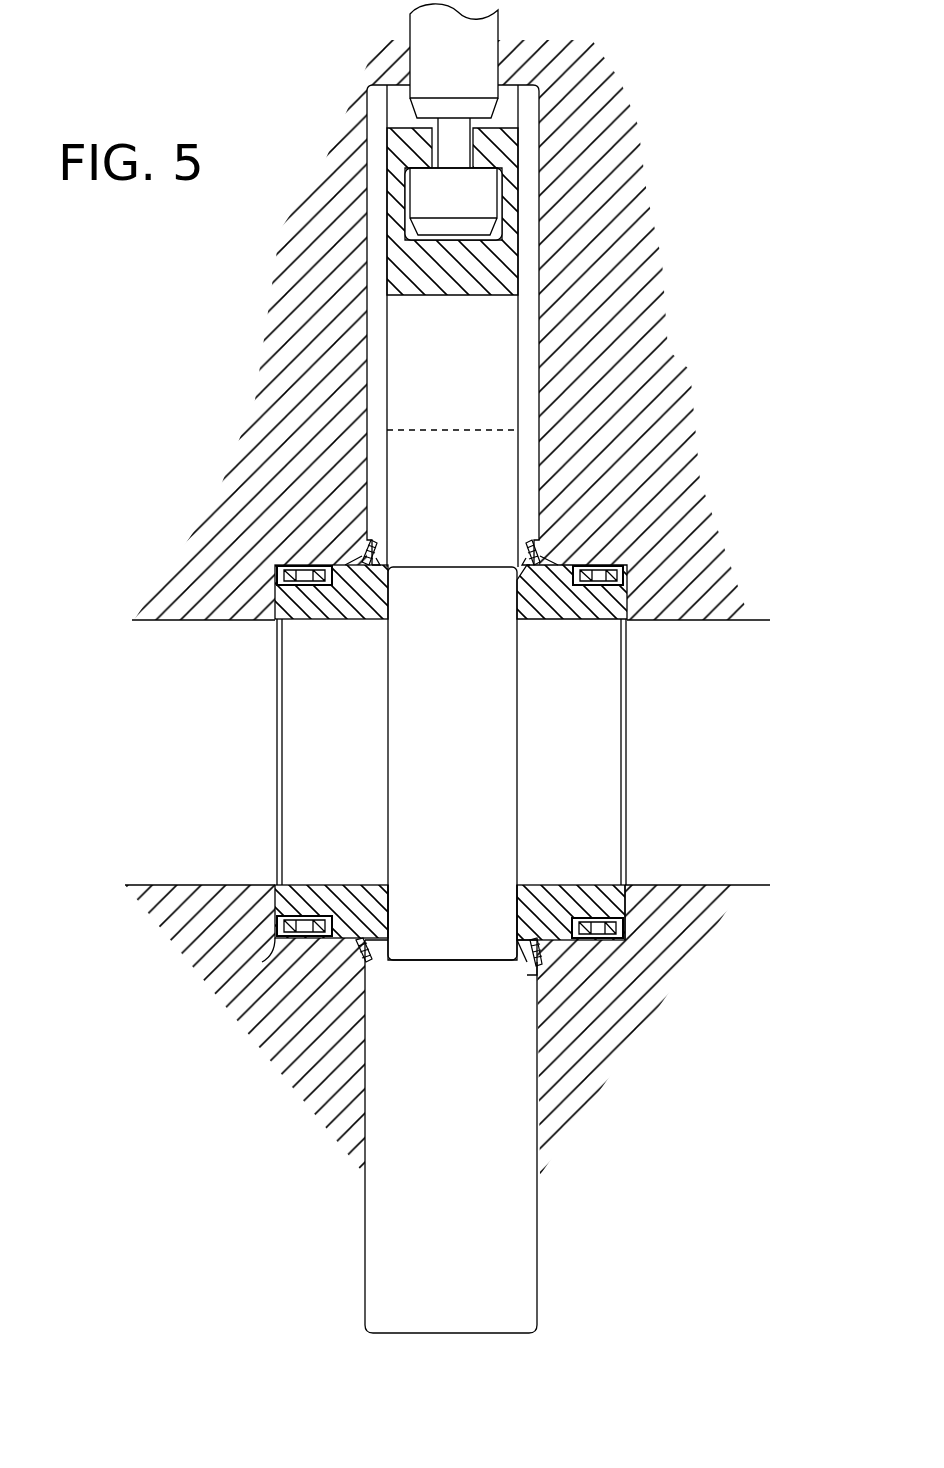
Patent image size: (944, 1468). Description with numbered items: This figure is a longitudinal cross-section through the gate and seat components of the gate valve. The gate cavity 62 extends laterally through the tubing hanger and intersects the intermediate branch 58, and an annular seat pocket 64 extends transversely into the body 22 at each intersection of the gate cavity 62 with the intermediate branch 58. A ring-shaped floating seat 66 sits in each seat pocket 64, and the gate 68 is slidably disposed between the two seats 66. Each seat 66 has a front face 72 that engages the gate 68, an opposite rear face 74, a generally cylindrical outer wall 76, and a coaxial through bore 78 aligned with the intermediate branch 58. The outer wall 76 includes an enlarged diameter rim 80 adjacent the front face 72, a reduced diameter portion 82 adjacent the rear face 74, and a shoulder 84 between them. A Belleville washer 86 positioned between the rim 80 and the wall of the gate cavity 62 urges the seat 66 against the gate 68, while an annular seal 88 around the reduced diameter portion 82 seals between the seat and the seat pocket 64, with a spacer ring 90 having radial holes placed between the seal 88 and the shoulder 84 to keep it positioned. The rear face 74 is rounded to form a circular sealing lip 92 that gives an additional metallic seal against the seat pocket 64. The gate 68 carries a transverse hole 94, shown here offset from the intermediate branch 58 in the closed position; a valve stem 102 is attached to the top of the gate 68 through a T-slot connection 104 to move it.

The body 22 is at (596, 392).
The intermediate branch 58 is at (148, 882).
The gate cavity 62 is at (435, 1158).
The seat pocket 64 is at (296, 567).
The seat 66 is at (344, 552).
The gate 68 is at (440, 712).
The front face 72 is at (515, 913).
The rear face 74 is at (632, 890).
The outer wall 76 is at (532, 942).
The through bore 78 is at (330, 620).
The rim 80 is at (525, 965).
The reduced diameter portion 82 is at (581, 917).
The shoulder 84 is at (594, 940).
The Belleville washer 86 is at (533, 968).
The annular seal 88 is at (283, 946).
The spacer ring 90 is at (332, 942).
The sealing lip 92 is at (626, 907).
The transverse hole 94 is at (490, 566).
The valve stem 102 is at (499, 40).
The T-slot connection 104 is at (418, 176).